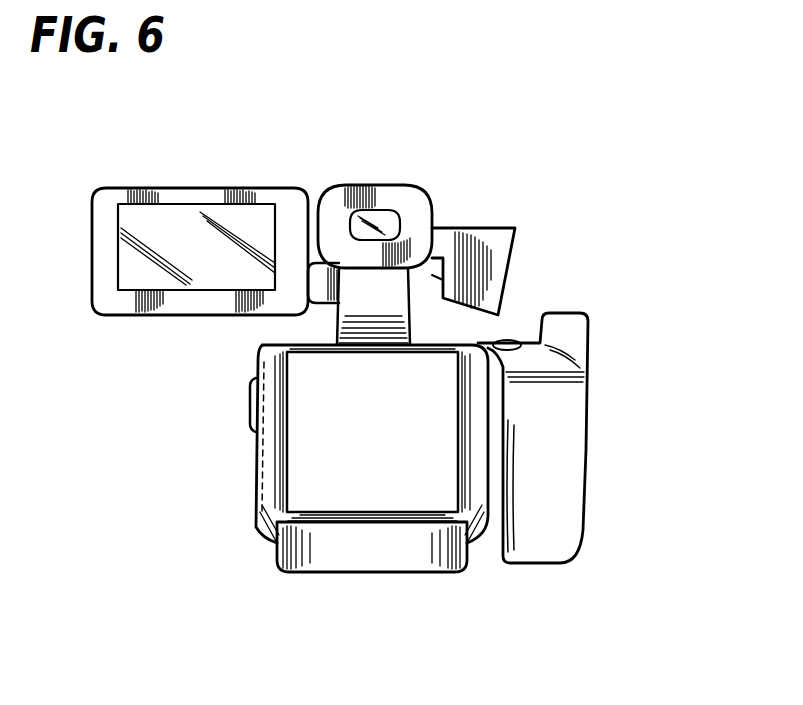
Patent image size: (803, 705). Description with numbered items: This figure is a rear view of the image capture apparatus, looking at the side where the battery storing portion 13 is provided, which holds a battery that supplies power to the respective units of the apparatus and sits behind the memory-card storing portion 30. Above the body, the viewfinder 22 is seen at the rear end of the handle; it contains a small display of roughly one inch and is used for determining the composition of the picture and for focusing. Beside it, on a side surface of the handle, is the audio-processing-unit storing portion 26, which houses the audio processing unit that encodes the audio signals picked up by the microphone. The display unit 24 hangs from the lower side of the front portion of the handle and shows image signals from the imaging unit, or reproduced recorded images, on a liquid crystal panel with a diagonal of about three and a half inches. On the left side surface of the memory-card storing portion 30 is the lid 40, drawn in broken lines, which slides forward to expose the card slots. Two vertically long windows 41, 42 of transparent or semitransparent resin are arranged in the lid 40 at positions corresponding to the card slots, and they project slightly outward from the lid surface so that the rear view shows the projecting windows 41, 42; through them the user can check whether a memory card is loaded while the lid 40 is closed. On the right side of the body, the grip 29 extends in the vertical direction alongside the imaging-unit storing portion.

The battery storing portion 13 is at (372, 468).
The viewfinder 22 is at (377, 225).
The display unit 24 is at (185, 215).
The audio-processing-unit storing portion 26 is at (485, 235).
The grip 29 is at (580, 402).
The memory-card storing portion 30 is at (255, 497).
The lid 40 is at (255, 445).
The window 41 is at (188, 405).
The window 42 is at (252, 400).